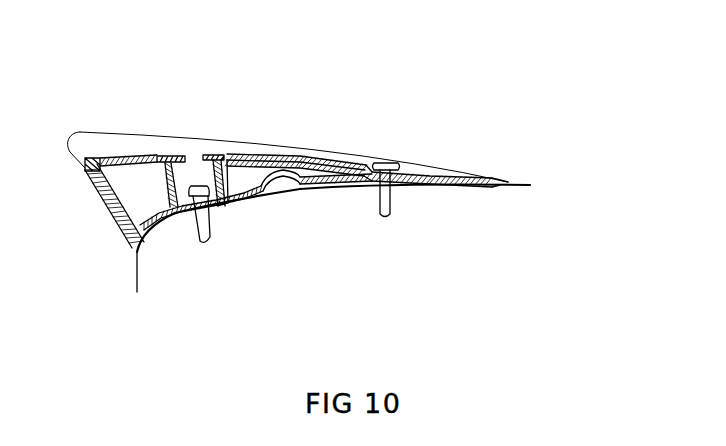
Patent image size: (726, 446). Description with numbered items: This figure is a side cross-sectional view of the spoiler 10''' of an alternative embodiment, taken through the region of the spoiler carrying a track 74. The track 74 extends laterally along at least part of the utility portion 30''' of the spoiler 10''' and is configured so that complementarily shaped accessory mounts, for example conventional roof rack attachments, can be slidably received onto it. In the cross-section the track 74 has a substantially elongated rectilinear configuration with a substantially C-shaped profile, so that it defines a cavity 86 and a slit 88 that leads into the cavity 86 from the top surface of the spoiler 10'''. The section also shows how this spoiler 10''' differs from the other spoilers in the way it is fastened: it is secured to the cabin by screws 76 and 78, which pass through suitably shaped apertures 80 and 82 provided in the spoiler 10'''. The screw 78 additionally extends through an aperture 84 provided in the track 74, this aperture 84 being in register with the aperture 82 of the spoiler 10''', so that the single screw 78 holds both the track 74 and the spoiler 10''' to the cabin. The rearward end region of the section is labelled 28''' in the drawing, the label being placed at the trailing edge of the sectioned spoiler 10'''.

The spoiler 10''' is at (299, 165).
The trailing edge 28''' is at (516, 133).
The utility portion 30''' is at (242, 123).
The track 74 is at (167, 158).
The screw 76 is at (387, 202).
The screw 78 is at (210, 237).
The aperture 80 is at (412, 174).
The aperture 82 is at (223, 162).
The aperture 84 is at (200, 200).
The cavity 86 is at (247, 140).
The slit 88 is at (184, 156).